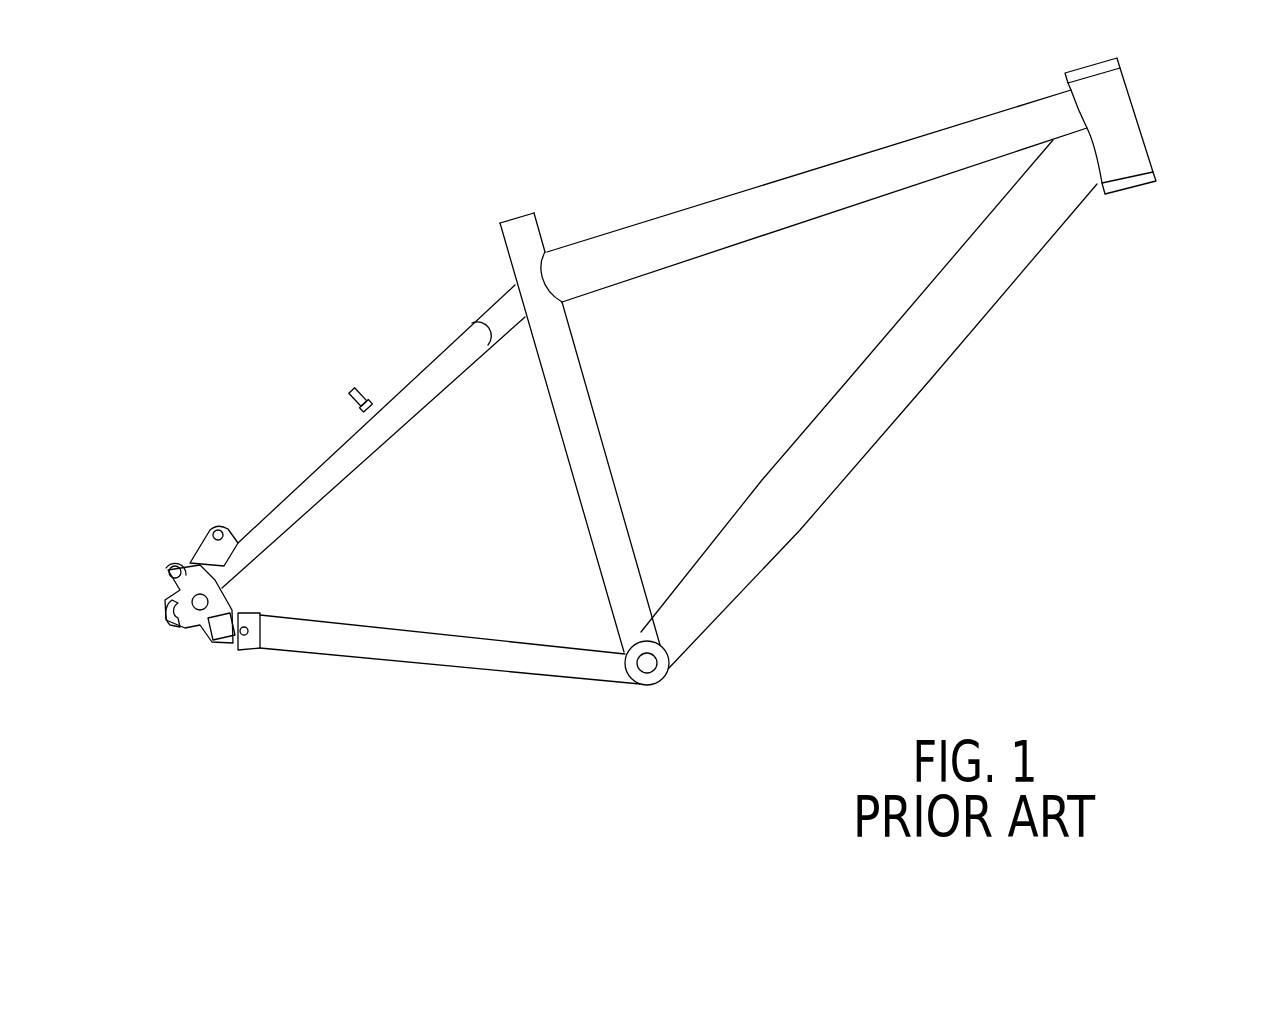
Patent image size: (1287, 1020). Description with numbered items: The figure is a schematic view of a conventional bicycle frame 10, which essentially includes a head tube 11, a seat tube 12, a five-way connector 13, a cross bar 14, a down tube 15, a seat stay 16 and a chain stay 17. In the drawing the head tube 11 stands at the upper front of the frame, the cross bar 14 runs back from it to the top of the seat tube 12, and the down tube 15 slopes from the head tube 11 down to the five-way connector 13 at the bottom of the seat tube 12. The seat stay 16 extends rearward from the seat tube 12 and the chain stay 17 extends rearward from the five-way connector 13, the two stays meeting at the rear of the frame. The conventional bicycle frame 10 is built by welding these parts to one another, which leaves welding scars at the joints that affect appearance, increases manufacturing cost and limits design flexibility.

The bicycle frame 10 is at (616, 203).
The head tube 11 is at (1122, 135).
The seat tube 12 is at (598, 417).
The five-way connector 13 is at (657, 680).
The cross bar 14 is at (720, 220).
The down tube 15 is at (882, 413).
The seat stay 16 is at (302, 484).
The chain stay 17 is at (445, 668).